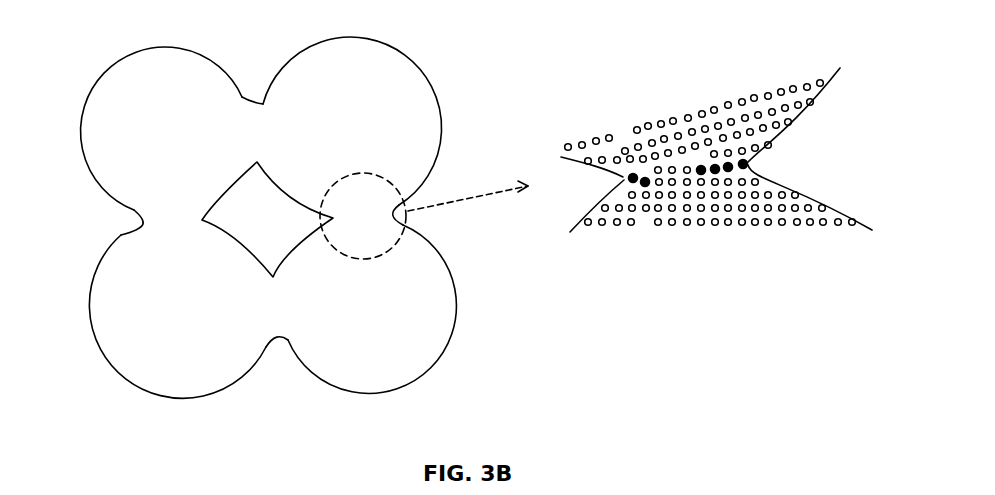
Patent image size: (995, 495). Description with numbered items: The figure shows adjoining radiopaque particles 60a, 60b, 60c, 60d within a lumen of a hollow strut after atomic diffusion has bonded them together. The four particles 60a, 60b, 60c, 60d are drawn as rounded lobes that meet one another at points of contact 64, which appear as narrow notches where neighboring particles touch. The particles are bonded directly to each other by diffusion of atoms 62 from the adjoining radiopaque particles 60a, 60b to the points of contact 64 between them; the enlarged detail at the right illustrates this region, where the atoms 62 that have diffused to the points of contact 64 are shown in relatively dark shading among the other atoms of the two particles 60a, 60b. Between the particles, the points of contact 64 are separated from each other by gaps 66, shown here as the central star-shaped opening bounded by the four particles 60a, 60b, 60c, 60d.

The radiopaque particle 60a is at (427, 70).
The radiopaque particle 60b is at (457, 307).
The radiopaque particle 60c is at (90, 297).
The radiopaque particle 60d is at (98, 83).
The atoms 62 is at (626, 180).
The points of contact 64 is at (250, 80).
The gaps 66 is at (258, 212).